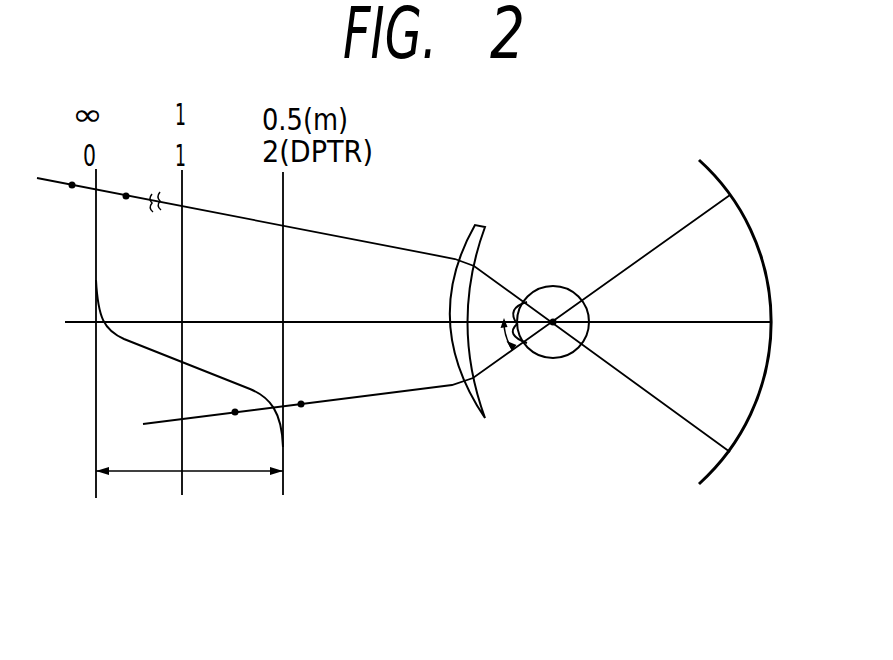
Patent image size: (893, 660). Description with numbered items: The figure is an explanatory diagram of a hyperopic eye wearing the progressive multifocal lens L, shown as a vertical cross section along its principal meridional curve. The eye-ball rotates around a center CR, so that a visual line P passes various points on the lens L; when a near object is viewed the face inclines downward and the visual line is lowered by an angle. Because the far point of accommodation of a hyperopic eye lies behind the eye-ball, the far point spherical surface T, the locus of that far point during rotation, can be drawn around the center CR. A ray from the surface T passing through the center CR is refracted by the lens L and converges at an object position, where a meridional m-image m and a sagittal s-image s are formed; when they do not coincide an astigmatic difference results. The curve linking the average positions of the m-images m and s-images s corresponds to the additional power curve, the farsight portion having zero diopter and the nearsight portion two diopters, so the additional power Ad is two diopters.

The progressive multifocal lens L is at (477, 227).
The eye O is at (568, 288).
The center of eye-ball rotation CR is at (552, 318).
The far point spherical surface T is at (740, 204).
The visual line P is at (675, 232).
The additional power Ad is at (189, 487).
The s-image (sagittal image) s is at (153, 315).
The m-image (meridional image) m is at (214, 313).